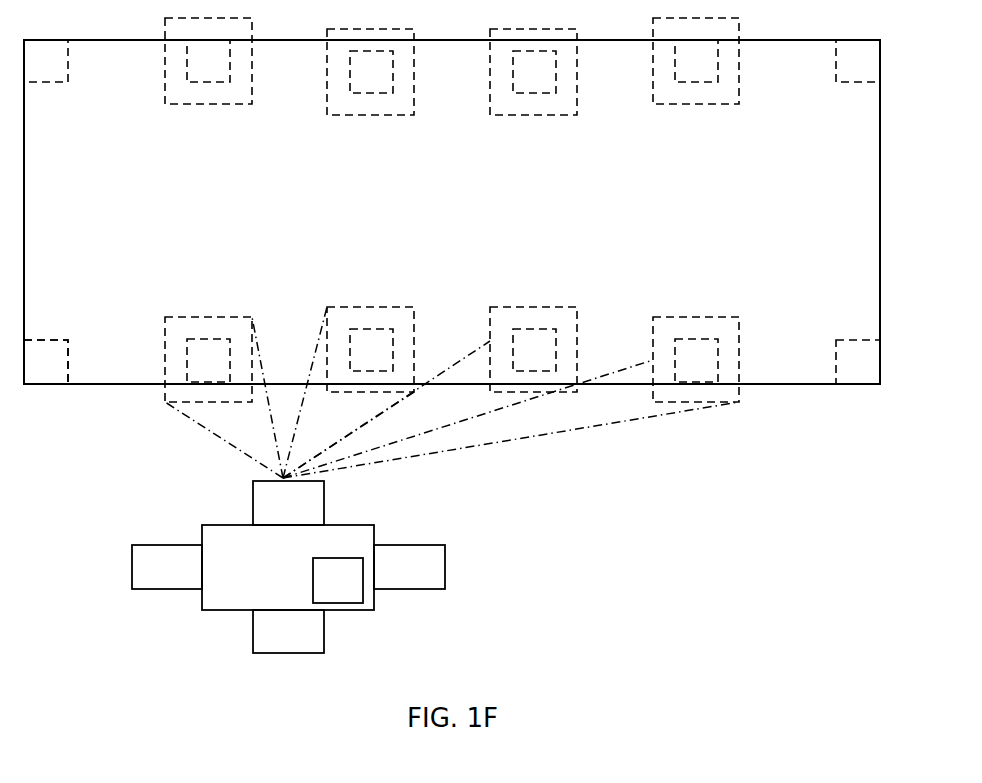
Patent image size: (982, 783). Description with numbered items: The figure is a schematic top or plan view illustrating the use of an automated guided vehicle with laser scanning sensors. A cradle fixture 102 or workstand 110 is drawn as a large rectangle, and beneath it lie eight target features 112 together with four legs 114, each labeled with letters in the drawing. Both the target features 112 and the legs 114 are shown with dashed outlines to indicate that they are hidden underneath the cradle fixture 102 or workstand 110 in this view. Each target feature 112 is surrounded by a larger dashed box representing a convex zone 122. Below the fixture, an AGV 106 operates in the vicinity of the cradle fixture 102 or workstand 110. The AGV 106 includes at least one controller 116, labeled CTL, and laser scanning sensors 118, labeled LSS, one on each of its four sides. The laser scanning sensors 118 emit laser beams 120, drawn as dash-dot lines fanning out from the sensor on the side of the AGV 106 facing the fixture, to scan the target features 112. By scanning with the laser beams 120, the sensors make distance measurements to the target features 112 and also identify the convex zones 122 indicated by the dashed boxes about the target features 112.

The cradle fixture 102 is at (452, 210).
The workstand 110 is at (452, 210).
The legs 114 is at (47, 338).
The target features 112 is at (208, 338).
The convex zones 122 is at (232, 316).
The laser beams 120 is at (522, 440).
The AGV 106 is at (288, 567).
The controller 116 is at (338, 580).
The laser scanning sensors 118 is at (288, 567).